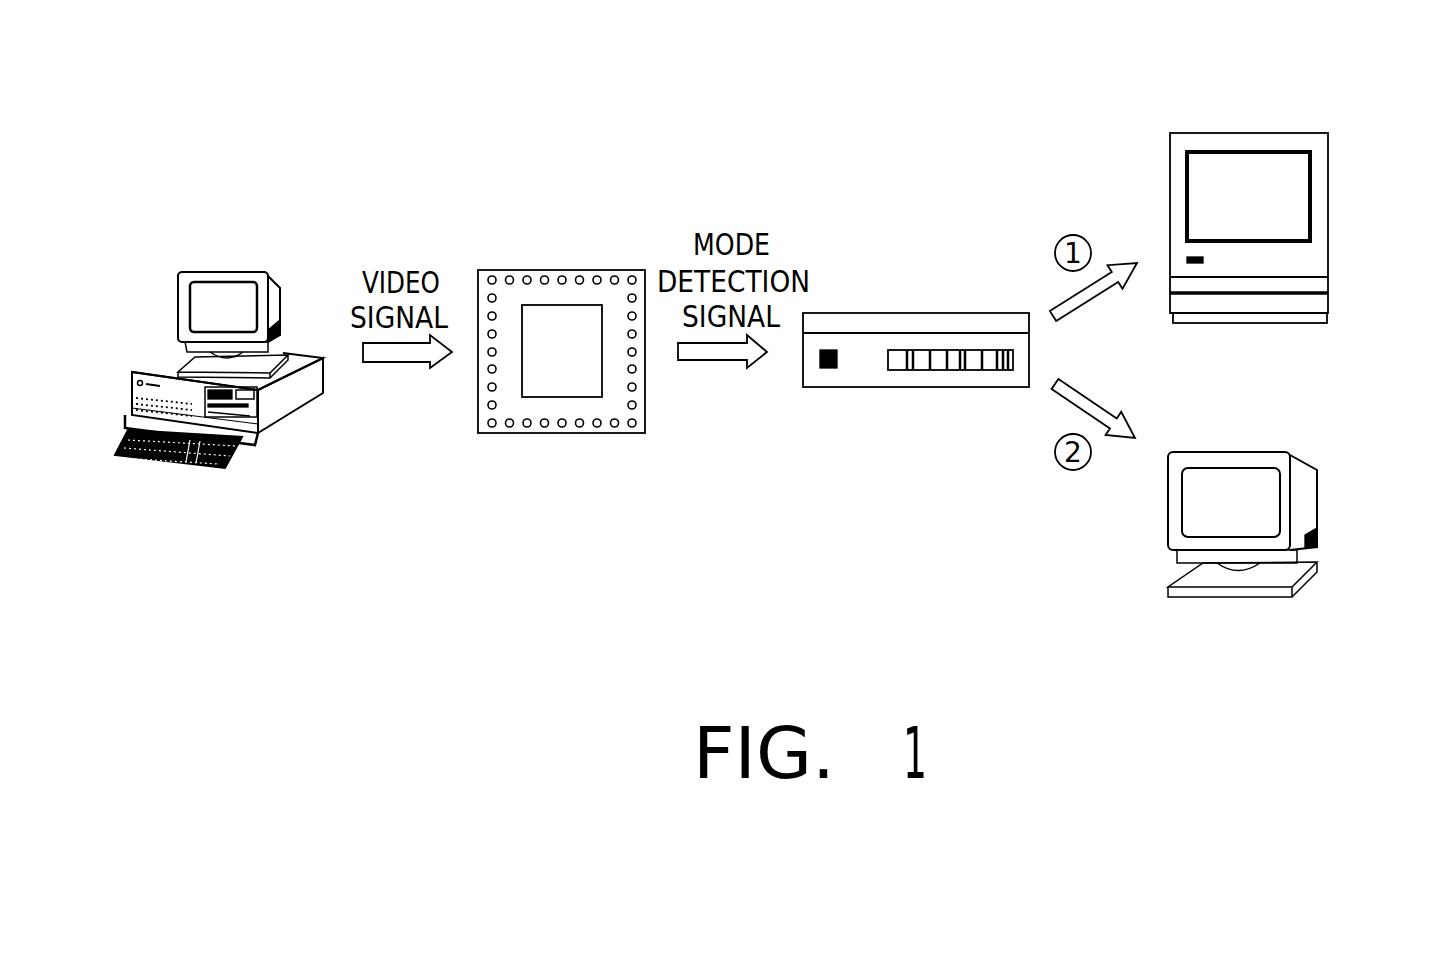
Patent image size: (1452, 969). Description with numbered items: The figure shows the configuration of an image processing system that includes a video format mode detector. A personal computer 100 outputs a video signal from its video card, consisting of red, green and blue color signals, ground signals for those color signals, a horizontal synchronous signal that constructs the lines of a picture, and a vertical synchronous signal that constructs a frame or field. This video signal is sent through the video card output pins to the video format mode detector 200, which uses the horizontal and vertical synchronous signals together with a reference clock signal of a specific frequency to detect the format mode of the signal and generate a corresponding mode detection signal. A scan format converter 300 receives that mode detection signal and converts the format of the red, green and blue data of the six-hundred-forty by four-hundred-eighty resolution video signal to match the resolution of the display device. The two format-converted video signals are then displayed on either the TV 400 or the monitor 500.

The personal computer 100 is at (220, 272).
The video format mode detector 200 is at (558, 270).
The scan format converter 300 is at (913, 312).
The TV 400 is at (1328, 203).
The monitor 500 is at (1317, 498).